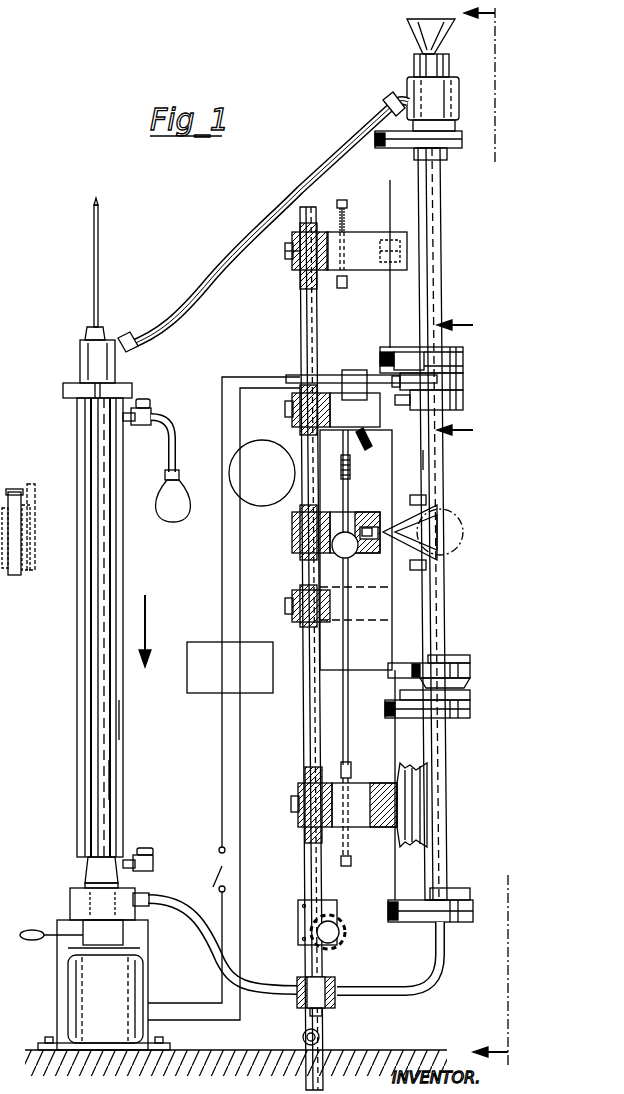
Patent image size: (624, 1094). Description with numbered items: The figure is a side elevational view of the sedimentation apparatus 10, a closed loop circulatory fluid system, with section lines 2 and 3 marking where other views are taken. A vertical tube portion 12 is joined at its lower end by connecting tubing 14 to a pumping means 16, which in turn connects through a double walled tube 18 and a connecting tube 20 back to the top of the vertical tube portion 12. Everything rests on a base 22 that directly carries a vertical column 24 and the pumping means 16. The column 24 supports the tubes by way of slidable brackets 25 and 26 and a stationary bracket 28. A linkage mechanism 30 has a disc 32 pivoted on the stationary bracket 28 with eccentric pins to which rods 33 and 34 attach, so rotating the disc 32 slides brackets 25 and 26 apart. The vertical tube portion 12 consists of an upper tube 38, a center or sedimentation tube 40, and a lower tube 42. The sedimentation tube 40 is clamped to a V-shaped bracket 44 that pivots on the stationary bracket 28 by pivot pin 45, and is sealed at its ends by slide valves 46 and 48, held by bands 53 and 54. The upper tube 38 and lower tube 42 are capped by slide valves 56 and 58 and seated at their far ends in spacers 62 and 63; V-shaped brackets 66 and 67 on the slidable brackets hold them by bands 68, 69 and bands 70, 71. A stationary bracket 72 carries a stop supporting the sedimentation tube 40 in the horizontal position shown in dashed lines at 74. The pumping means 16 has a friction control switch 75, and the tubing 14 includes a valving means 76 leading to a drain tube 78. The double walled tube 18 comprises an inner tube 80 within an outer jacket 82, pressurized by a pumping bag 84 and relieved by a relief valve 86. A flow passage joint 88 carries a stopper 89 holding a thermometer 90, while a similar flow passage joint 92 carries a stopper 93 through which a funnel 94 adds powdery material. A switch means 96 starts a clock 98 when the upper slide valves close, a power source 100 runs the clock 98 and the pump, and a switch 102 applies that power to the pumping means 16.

The section line 2- 2 is at (494, 538).
The section line 3- 3 is at (465, 379).
The sedimentation apparatus 10 is at (196, 362).
The vertical tube portion 12 is at (447, 470).
The connecting tubing 14 is at (410, 980).
The pumping means 16 is at (68, 973).
The double walled tube 18 is at (114, 627).
The connecting tube 20 is at (266, 236).
The base 22 is at (250, 1050).
The vertical column 24 is at (302, 728).
The slidable bracket 25 is at (366, 828).
The slidable bracket 26 is at (372, 232).
The stationary bracket 28 is at (350, 515).
The linkage mechanism 30 is at (352, 575).
The disc 32 is at (340, 556).
The rod 33 is at (350, 735).
The rod 34 is at (352, 448).
The upper tube 38 is at (440, 250).
The center tube 40 is at (392, 612).
The lower tube 42 is at (442, 812).
The V-shaped bracket 44 is at (388, 648).
The pivot pin 45 is at (370, 548).
The slide valve 46 is at (466, 656).
The slide valve 48 is at (463, 385).
The band 53 is at (470, 672).
The band 54 is at (463, 398).
The slide valve 56 is at (463, 348).
The slide valve 58 is at (462, 720).
The spacer 62 is at (445, 156).
The spacer 63 is at (460, 890).
The V-shaped bracket 66 is at (400, 882).
The V-shaped bracket 67 is at (390, 296).
The band 68 is at (473, 912).
The band 69 is at (470, 694).
The band 70 is at (402, 352).
The band 71 is at (462, 138).
The stationary bracket 72 is at (357, 626).
The rotated sedimentation tube position 74 is at (462, 540).
The friction control switch 75 is at (34, 928).
The valving means 76 is at (334, 970).
The drain tube 78 is at (303, 1028).
The inner tube 80 is at (108, 788).
The outer jacket 82 is at (125, 730).
The pumping bag 84 is at (156, 480).
The relief valve 86 is at (146, 855).
The flow passage joint 88 is at (80, 360).
The stopper 89 is at (106, 332).
The thermometer 90 is at (99, 278).
The flow passage joint 92 is at (459, 102).
The stopper 93 is at (446, 66).
The funnel 94 is at (414, 40).
The switch means 96 is at (360, 372).
The clock 98 is at (256, 506).
The power source 100 is at (185, 696).
The switch 102 is at (224, 698).